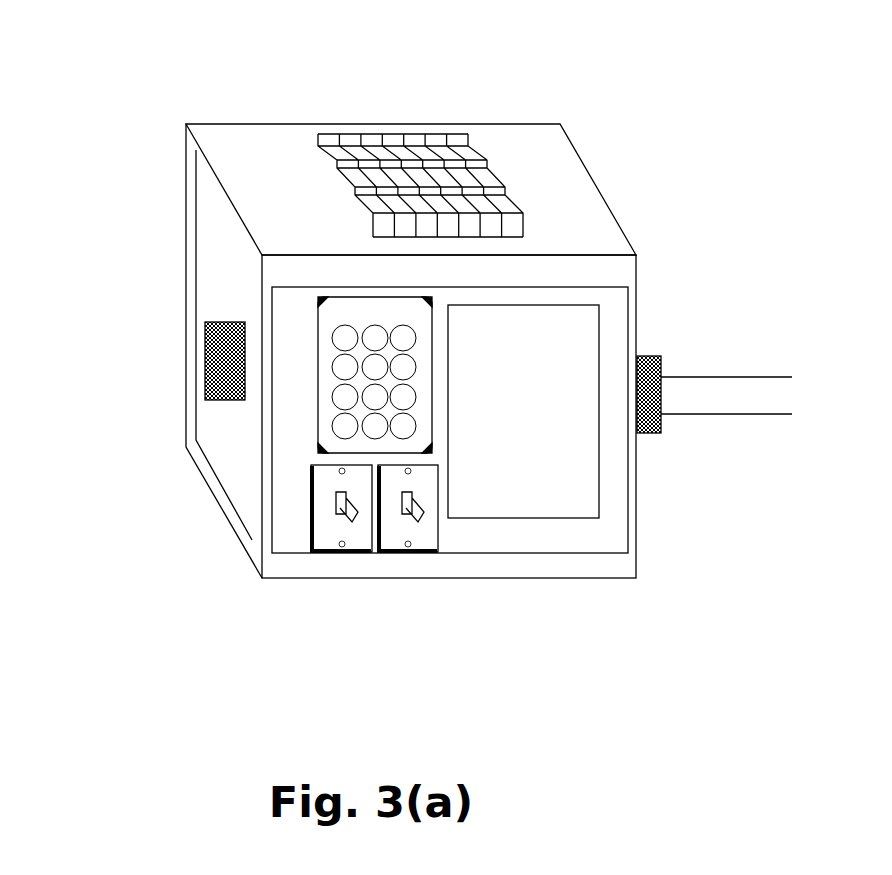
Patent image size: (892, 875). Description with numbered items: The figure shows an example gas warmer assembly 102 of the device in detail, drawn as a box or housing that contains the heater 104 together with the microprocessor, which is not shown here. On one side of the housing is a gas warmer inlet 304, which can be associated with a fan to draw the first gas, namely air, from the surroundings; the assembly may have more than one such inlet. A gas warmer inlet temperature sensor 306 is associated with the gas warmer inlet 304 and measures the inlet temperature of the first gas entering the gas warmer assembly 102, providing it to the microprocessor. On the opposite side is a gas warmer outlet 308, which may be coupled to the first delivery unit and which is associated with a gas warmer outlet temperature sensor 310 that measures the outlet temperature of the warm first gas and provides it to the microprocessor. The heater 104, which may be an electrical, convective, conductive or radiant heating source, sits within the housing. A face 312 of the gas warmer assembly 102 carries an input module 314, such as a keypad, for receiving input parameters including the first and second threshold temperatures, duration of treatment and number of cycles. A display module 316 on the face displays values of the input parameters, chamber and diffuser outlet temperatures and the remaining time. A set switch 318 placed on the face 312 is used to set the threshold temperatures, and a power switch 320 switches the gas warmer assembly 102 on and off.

The gas warmer assembly 102 is at (142, 70).
The heater 104 is at (493, 170).
The gas warmer inlet 304 is at (205, 360).
The gas warmer inlet temperature sensor 306 is at (225, 400).
The gas warmer outlet 308 is at (638, 322).
The gas warmer outlet temperature sensor 310 is at (660, 356).
The face 312 is at (613, 508).
The input module 314 is at (351, 297).
The display module 316 is at (522, 518).
The set switch 318 is at (407, 552).
The power switch 320 is at (342, 552).